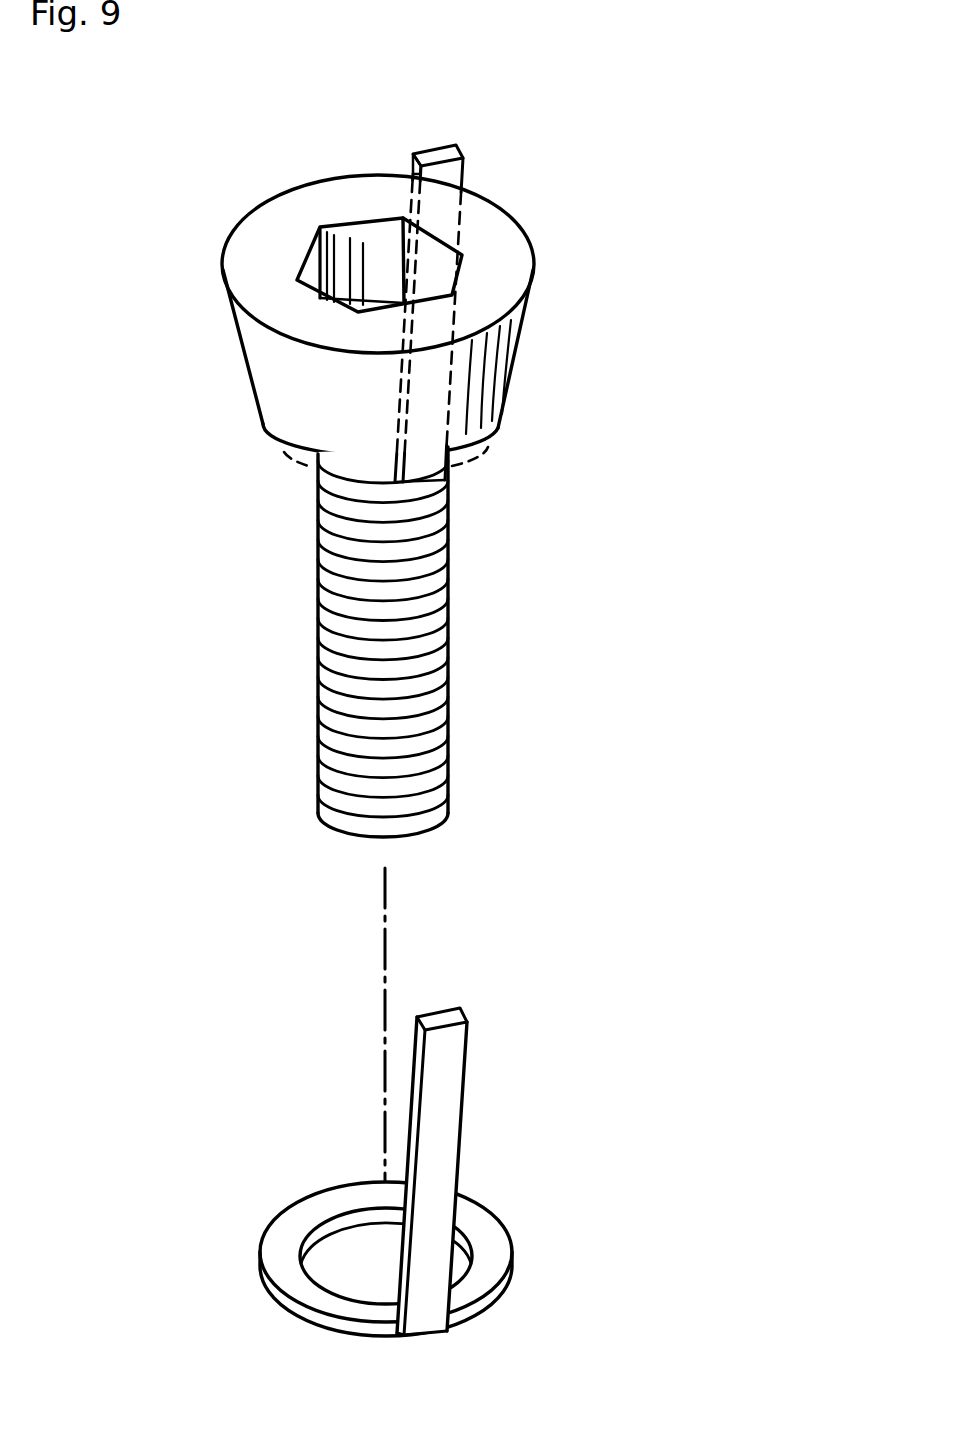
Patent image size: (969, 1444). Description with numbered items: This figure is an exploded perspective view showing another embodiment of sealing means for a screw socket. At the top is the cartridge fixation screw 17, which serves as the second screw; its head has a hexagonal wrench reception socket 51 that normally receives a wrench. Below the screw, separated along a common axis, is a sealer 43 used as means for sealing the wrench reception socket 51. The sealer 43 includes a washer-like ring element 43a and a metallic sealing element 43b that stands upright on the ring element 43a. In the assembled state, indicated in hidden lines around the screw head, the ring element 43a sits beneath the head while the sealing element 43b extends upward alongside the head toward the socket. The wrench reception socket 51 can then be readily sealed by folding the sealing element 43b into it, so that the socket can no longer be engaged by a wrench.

The cartridge fixation screw 17 is at (510, 251).
The sealer 43 is at (406, 723).
The ring element 43a is at (287, 453).
The sealing element 43b is at (456, 167).
The wrench reception socket 51 is at (333, 220).